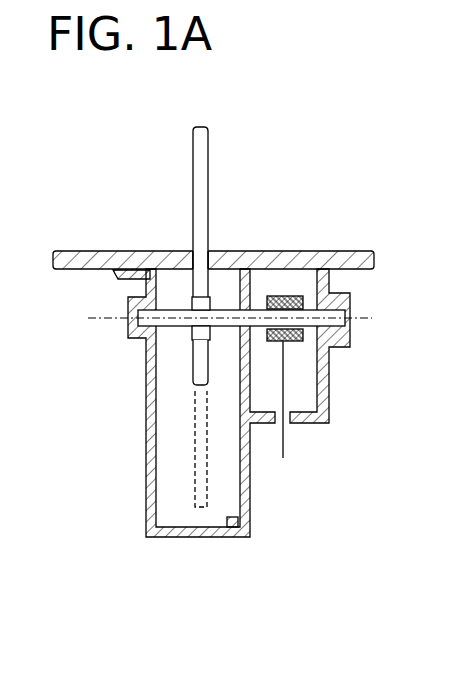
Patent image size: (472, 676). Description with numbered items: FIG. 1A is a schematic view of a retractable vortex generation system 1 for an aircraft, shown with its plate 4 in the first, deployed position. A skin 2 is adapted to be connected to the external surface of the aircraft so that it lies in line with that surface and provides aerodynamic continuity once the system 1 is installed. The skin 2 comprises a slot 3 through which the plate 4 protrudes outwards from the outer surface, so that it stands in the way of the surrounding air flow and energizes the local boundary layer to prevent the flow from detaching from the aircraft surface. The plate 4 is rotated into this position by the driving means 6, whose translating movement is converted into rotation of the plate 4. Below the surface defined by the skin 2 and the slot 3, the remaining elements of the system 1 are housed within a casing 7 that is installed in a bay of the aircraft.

The retractable vortex generation system 1 is at (128, 505).
The skin 2 is at (336, 262).
The slot 3 is at (193, 252).
The plate 4 is at (196, 183).
The driving means 6 is at (302, 346).
The casing 7 is at (146, 395).